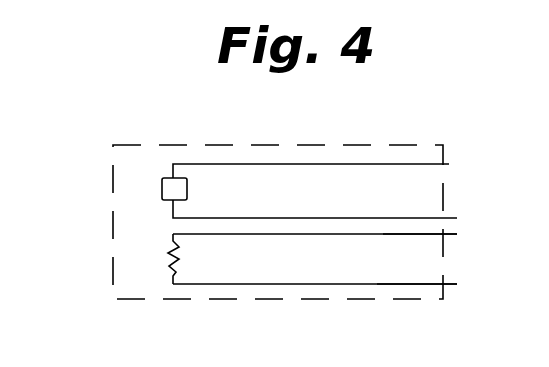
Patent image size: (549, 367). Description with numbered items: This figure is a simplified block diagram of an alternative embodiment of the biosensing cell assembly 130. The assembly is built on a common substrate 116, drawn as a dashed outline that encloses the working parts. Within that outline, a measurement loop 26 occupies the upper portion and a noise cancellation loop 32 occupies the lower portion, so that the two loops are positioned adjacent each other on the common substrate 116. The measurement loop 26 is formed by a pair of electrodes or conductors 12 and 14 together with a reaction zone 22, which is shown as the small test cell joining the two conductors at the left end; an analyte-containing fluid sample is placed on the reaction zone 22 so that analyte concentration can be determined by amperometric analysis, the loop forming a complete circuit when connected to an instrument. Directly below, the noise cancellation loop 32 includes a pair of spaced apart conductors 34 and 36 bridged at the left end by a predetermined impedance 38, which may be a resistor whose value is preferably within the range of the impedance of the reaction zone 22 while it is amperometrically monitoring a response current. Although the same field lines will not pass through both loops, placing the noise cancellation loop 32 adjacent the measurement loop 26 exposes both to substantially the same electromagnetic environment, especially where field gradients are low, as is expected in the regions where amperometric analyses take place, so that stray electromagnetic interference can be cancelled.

The biosensing cell assembly 130 is at (323, 134).
The conductor 12 is at (403, 164).
The conductor 14 is at (415, 218).
The reaction zone 22 is at (162, 190).
The measurement loop 26 is at (333, 198).
The noise cancellation loop 32 is at (318, 274).
The conductor 34 is at (383, 236).
The conductor 36 is at (377, 284).
The impedance 38 is at (172, 262).
The common substrate 116 is at (285, 299).